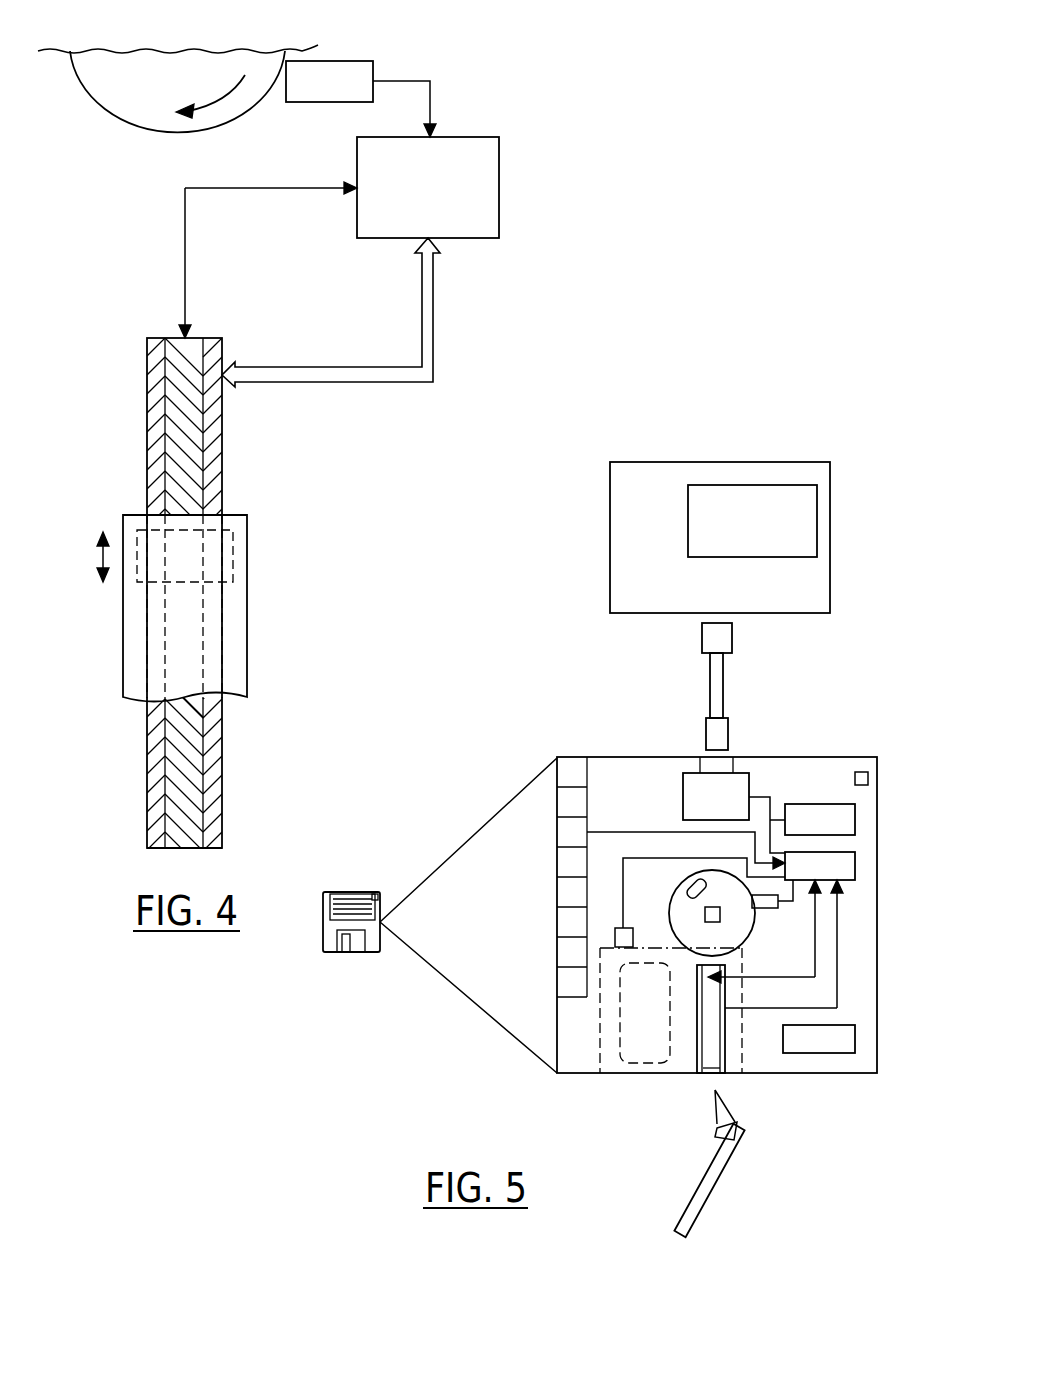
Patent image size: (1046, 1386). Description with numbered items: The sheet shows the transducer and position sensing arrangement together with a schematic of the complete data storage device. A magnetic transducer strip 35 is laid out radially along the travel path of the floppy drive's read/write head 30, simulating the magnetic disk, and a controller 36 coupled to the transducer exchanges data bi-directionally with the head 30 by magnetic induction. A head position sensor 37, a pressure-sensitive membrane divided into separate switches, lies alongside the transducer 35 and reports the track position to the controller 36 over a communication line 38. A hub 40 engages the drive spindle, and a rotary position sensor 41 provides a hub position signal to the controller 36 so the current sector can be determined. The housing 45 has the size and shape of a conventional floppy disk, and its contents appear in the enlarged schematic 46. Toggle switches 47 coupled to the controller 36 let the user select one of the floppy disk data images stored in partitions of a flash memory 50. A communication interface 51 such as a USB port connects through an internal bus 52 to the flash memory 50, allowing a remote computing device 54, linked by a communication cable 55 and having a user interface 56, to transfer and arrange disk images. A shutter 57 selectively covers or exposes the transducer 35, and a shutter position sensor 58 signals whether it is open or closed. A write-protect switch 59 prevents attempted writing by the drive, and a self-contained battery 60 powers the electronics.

In FIG. 4, the read/write head 30 is at (245, 576).
In FIG. 5, the read/write head 30 is at (770, 1133).
In FIG. 4, the magnetic transducer strip 35 is at (185, 845).
In FIG. 5, the magnetic transducer strip 35 is at (705, 1073).
In FIG. 4, the controller 36 is at (500, 182).
In FIG. 5, the controller 36 is at (848, 882).
In FIG. 4, the head position sensor 37 is at (153, 428).
In FIG. 5, the head position sensor 37 is at (695, 1065).
In FIG. 4, the communication line 38 is at (433, 320).
In FIG. 4, the hub 40 is at (140, 132).
In FIG. 5, the hub 40 is at (750, 940).
In FIG. 4, the position sensor 41 is at (323, 60).
In FIG. 5, the position sensor 41 is at (762, 908).
In FIG. 5, the housing 45 is at (330, 952).
In FIG. 5, the enlarged schematic 46 is at (535, 716).
In FIG. 5, the toggle switches 47 is at (530, 903).
In FIG. 5, the flash memory 50 is at (823, 804).
In FIG. 5, the communication interface 51 is at (683, 797).
In FIG. 5, the internal bus 52 is at (767, 792).
In FIG. 5, the computing device 54 is at (610, 488).
In FIG. 5, the communication cable 55 is at (710, 663).
In FIG. 5, the user interface 56 is at (688, 535).
In FIG. 5, the shutter 57 is at (600, 1027).
In FIG. 5, the shutter position sensor 58 is at (632, 927).
In FIG. 5, the write-protect switch 59 is at (861, 772).
In FIG. 5, the battery 60 is at (790, 1055).